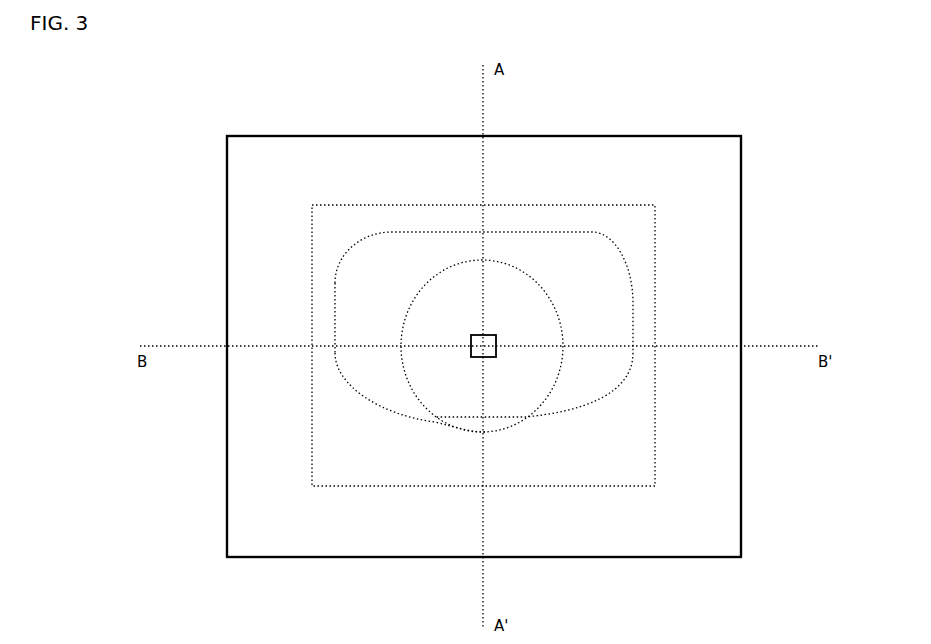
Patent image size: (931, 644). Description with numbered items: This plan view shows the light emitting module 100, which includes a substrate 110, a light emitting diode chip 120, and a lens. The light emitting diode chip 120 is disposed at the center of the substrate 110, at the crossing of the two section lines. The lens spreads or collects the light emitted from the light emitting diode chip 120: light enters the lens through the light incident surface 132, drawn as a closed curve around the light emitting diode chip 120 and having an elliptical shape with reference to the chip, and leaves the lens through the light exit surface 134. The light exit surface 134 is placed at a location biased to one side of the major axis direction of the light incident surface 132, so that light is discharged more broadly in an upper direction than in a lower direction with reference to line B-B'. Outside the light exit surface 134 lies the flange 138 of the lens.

The light emitting module 100 is at (308, 113).
The substrate 110 is at (723, 160).
The light emitting diode chip 120 is at (496, 347).
The light incident surface 132 is at (560, 316).
The light exit surface 134 is at (613, 253).
The flange 138 is at (638, 231).